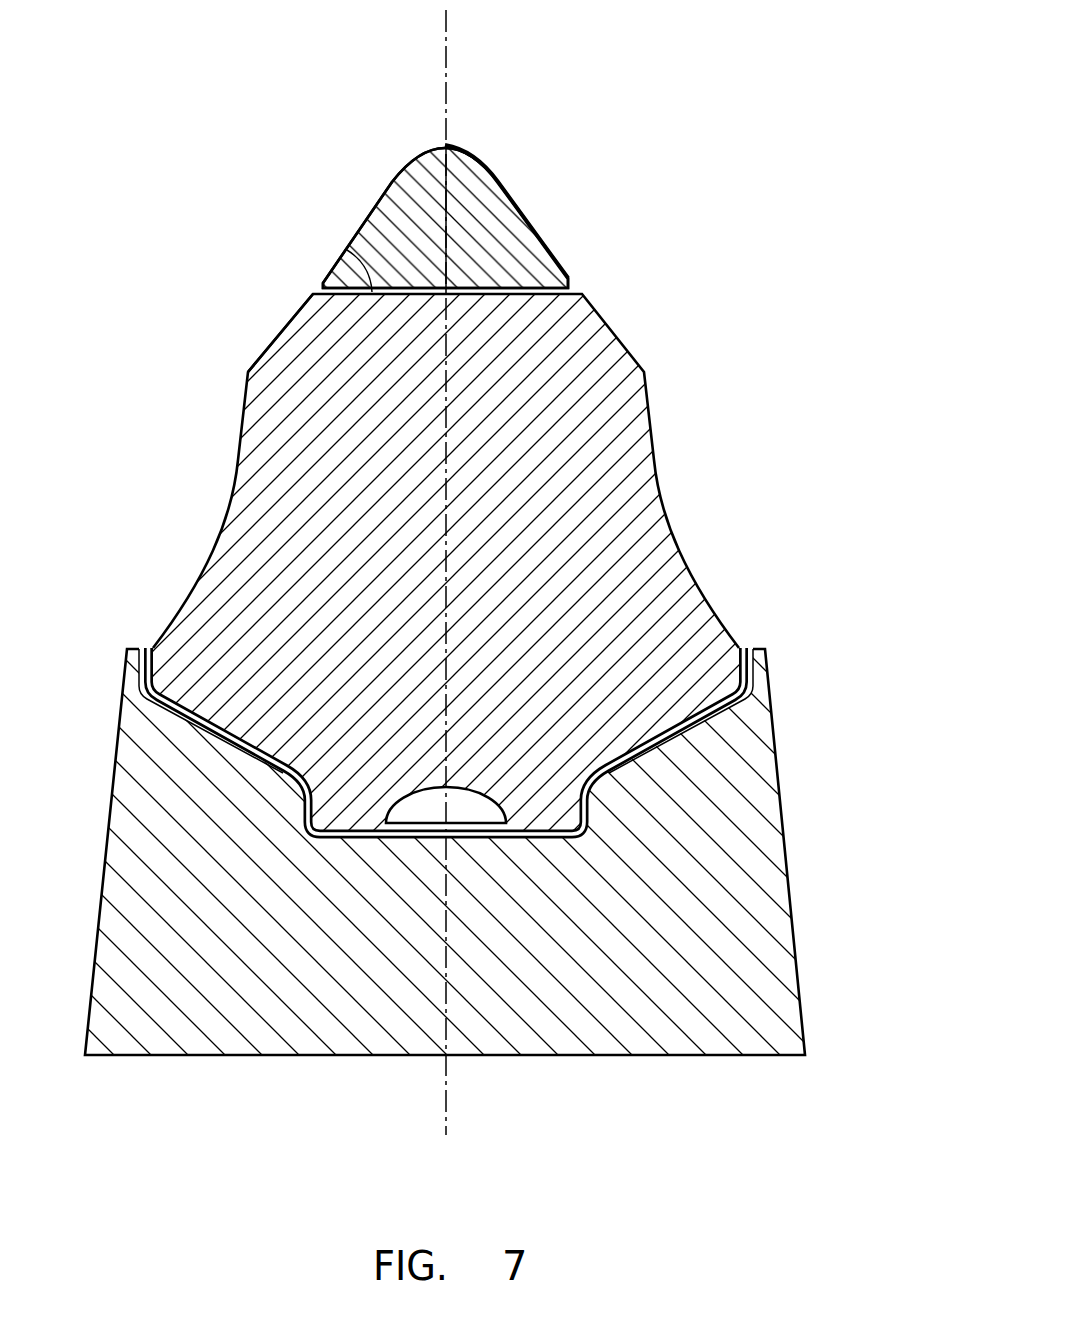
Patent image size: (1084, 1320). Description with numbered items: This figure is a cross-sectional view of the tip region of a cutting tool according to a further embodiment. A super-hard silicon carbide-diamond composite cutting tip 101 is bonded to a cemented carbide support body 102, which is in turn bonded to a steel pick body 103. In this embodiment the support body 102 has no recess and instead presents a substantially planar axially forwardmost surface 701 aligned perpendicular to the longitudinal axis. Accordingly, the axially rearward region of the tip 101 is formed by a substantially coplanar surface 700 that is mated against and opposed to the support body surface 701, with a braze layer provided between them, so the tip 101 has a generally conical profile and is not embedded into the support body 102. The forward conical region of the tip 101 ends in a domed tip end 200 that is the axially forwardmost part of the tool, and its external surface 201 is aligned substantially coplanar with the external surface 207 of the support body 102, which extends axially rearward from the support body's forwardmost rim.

The cutting tip 101 is at (530, 147).
The support body 102 is at (672, 395).
The pick body 103 is at (802, 903).
The domed tip end 200 is at (461, 147).
The external surface 201 is at (527, 222).
The external surface of support body 207 is at (280, 332).
The coplanar surface 700 is at (507, 294).
The planar axially forwardmost surface 701 is at (347, 250).